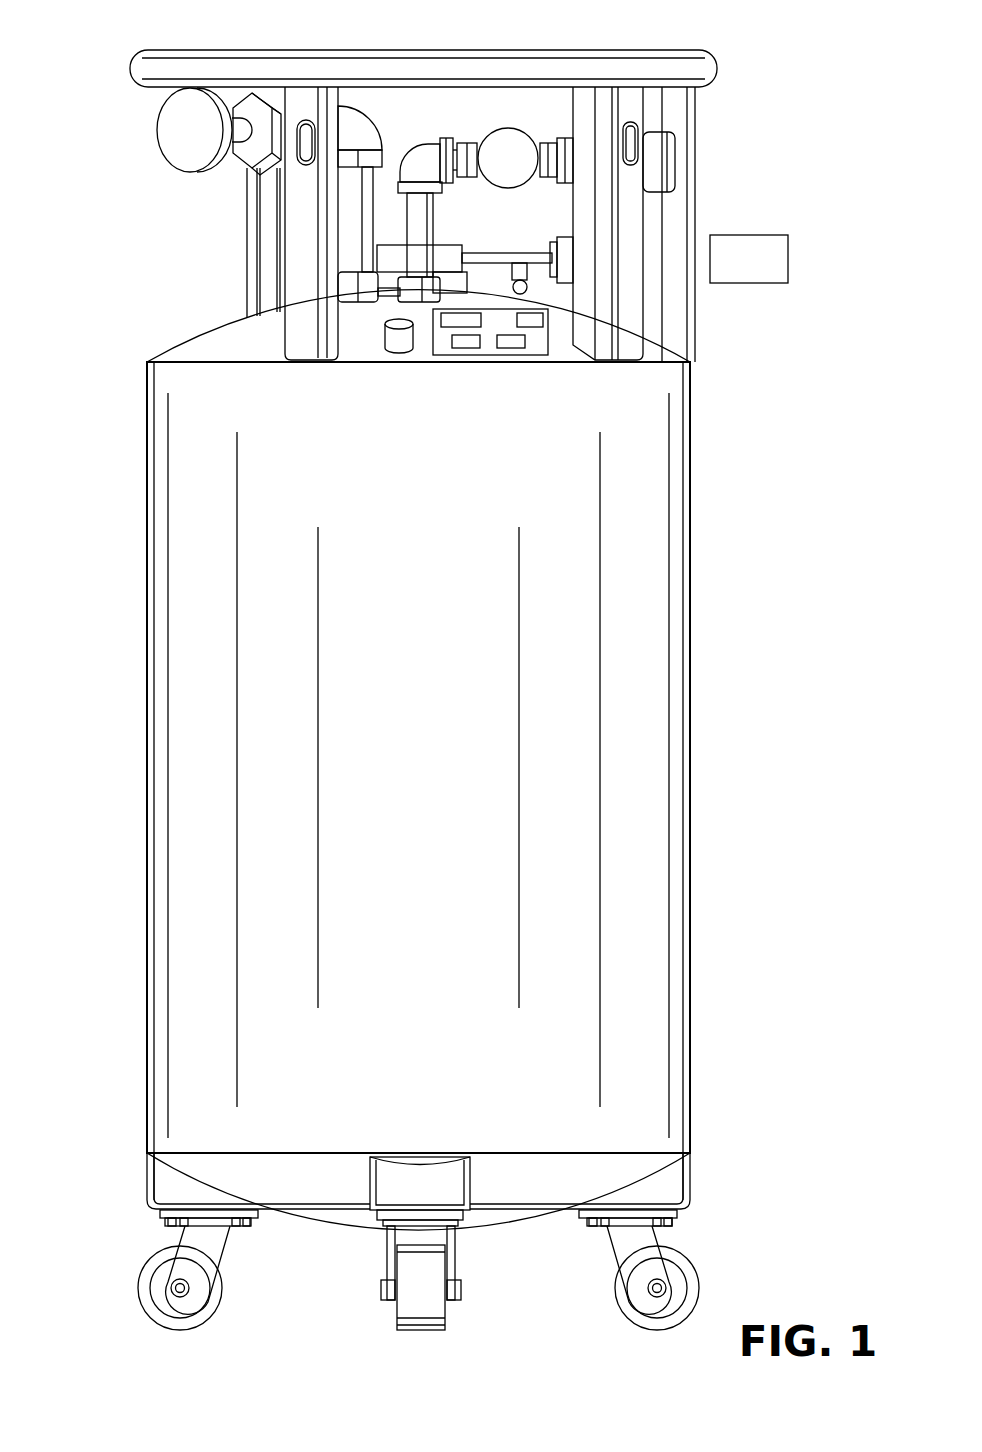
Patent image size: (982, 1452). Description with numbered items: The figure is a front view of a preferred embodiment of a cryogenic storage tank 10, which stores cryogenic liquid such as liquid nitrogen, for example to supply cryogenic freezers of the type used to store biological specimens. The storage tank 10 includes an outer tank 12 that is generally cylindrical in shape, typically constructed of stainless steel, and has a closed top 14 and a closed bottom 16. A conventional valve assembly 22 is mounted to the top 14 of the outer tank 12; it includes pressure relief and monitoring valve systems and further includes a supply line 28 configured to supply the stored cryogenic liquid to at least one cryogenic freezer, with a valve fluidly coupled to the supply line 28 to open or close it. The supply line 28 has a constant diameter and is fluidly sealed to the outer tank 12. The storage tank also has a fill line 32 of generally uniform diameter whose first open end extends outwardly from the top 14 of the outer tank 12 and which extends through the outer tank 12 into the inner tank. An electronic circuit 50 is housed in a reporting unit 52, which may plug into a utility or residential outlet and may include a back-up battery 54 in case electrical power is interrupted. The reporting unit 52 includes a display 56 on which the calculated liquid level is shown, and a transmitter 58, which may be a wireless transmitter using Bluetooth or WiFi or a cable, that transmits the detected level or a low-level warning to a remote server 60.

The cryogenic storage tank 10 is at (811, 119).
The outer tank 12 is at (146, 806).
The top 14 is at (220, 343).
The bottom 16 is at (352, 1222).
The valve assembly 22 is at (475, 117).
The supply line 28 is at (420, 225).
The fill line 32 is at (365, 190).
The electronic circuit 50 is at (465, 349).
The reporting unit 52 is at (519, 356).
The back-up battery 54 is at (527, 341).
The display 56 is at (433, 320).
The transmitter 58 is at (545, 322).
The remote server 60 is at (547, 317).